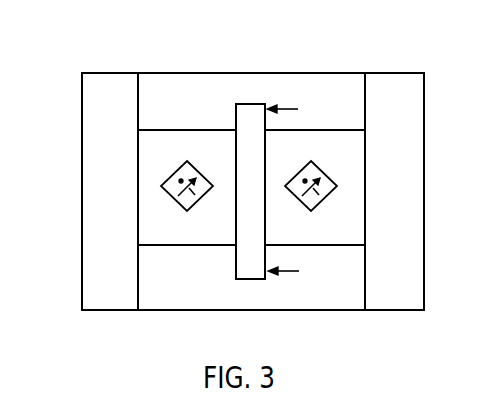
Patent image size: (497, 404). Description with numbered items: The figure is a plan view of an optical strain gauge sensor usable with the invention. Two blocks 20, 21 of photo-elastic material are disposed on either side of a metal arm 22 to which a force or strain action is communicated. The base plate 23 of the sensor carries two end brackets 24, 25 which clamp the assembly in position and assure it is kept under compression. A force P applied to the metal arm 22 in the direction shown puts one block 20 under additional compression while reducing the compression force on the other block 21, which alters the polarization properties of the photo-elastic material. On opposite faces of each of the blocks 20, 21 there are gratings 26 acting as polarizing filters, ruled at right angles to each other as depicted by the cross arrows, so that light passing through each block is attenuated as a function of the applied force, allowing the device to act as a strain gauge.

The block of photo-elastic material 20 is at (157, 150).
The block of photo-elastic material 21 is at (335, 148).
The metal arm 22 is at (252, 117).
The base plate 23 is at (180, 294).
The end bracket 24 is at (110, 160).
The end bracket 25 is at (393, 174).
The gratings 26 is at (322, 198).
The force P is at (293, 190).